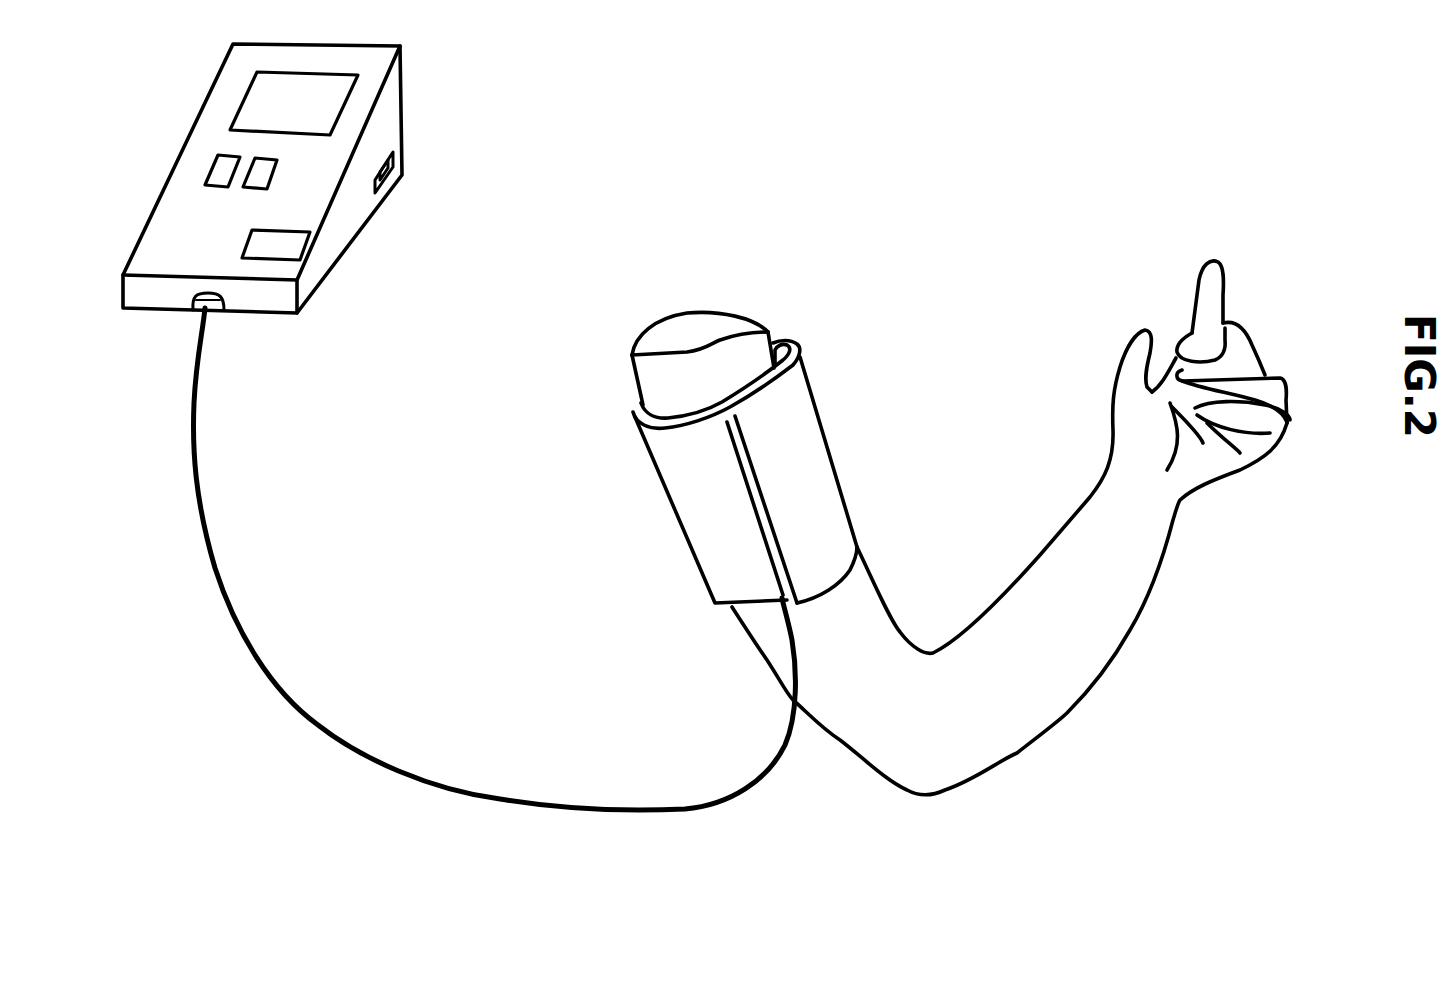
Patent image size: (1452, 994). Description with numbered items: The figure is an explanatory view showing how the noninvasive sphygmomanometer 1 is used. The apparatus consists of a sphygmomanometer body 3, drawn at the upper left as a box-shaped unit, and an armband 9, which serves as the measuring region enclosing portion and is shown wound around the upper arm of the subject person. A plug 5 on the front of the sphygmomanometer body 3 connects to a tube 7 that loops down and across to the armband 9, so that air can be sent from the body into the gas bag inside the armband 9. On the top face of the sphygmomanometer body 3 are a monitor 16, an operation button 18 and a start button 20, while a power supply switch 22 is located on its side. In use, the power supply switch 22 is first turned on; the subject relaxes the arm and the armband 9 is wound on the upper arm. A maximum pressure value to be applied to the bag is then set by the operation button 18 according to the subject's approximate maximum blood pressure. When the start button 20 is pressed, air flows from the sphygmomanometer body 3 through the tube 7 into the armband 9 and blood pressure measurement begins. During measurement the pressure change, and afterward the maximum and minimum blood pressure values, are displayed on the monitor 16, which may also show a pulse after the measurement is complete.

The noninvasive sphygmomanometer 1 is at (623, 102).
The sphygmomanometer body 3 is at (402, 118).
The plug 5 is at (220, 310).
The tube 7 is at (235, 614).
The armband 9 is at (821, 470).
The monitor 16 is at (247, 94).
The operation button 18 is at (247, 185).
The start button 20 is at (294, 243).
The power supply switch 22 is at (382, 203).